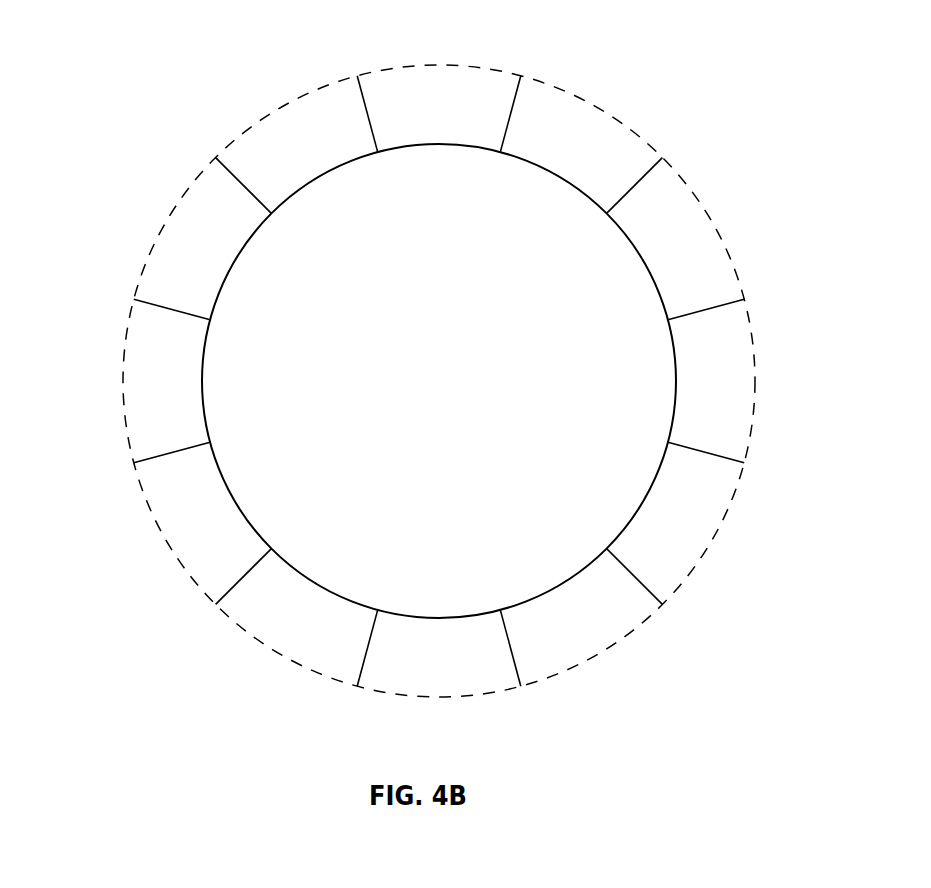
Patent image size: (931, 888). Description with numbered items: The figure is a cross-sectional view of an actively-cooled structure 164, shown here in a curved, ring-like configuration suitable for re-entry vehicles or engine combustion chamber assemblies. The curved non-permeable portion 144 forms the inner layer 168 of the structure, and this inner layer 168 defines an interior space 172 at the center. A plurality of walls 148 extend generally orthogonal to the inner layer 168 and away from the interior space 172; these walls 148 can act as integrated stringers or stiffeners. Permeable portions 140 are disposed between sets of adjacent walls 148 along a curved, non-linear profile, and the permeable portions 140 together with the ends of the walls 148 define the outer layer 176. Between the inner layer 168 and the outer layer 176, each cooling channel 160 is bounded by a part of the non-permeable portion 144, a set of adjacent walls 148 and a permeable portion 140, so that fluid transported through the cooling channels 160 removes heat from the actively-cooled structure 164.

The permeable portion 140 is at (703, 207).
The non-permeable portion 144 is at (677, 373).
The plurality of walls 148 is at (522, 93).
The cooling channels 160 is at (419, 116).
The actively-cooled structure 164 is at (100, 93).
The inner layer 168 is at (292, 192).
The interior space 172 is at (375, 574).
The outer layer 176 is at (118, 470).